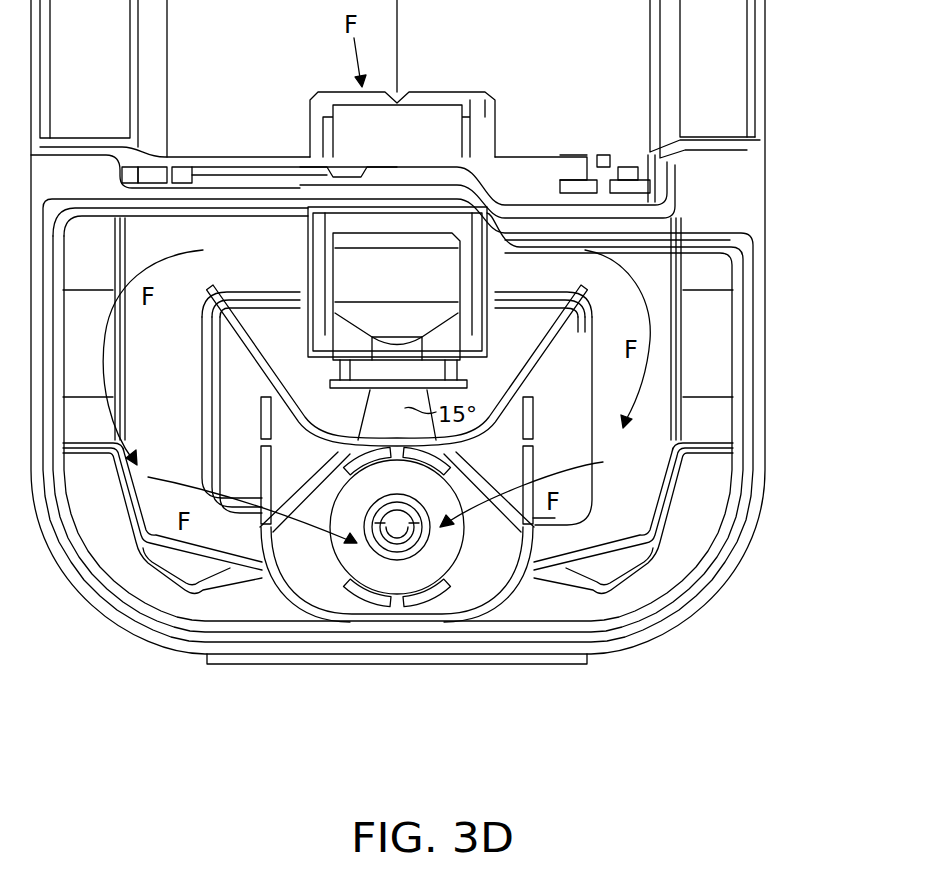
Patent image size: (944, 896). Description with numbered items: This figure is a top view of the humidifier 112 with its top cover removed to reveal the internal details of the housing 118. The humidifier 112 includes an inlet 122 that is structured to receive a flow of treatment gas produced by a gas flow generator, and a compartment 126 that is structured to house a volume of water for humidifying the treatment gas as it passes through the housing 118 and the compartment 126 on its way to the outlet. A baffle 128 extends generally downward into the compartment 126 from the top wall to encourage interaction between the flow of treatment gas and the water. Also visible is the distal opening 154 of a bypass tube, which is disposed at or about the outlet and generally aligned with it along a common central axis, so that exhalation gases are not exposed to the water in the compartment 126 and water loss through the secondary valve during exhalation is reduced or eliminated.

The humidifier 112 is at (645, 684).
The housing 118 is at (755, 357).
The inlet 122 is at (416, 88).
The compartment 126 is at (163, 512).
The baffle 128 is at (260, 356).
The distal opening 154 is at (397, 527).